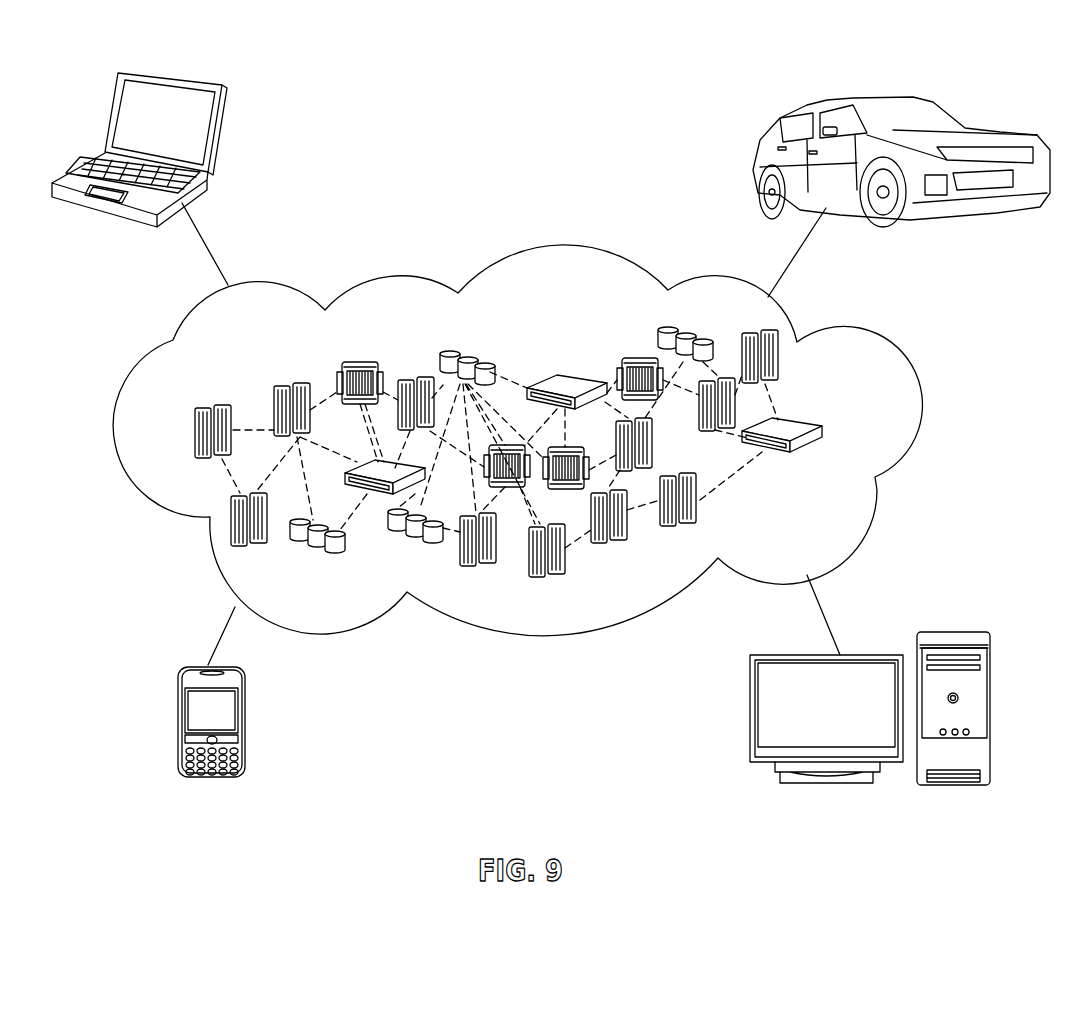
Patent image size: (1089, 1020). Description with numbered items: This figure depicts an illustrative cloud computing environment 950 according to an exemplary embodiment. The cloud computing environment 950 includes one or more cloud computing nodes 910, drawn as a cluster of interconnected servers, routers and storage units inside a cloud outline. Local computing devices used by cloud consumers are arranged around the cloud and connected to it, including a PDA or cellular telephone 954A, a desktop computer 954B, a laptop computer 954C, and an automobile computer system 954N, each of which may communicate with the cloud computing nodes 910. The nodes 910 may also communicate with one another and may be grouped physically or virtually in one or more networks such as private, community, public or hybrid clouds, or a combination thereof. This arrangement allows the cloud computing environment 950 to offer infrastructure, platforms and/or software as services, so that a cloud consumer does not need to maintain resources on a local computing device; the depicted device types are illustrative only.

The cloud computing environment 950 is at (880, 353).
The cloud computing nodes 910 is at (589, 452).
The cellular telephone 954A is at (178, 727).
The desktop computer 954B is at (958, 630).
The laptop computer 954C is at (214, 136).
The automobile computer system 954N is at (762, 143).